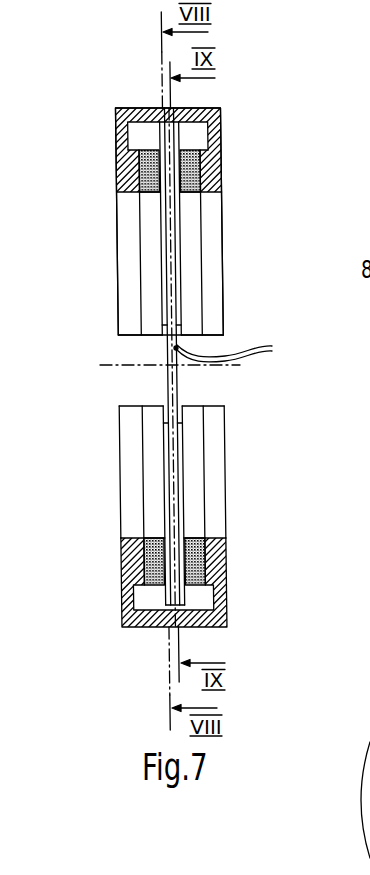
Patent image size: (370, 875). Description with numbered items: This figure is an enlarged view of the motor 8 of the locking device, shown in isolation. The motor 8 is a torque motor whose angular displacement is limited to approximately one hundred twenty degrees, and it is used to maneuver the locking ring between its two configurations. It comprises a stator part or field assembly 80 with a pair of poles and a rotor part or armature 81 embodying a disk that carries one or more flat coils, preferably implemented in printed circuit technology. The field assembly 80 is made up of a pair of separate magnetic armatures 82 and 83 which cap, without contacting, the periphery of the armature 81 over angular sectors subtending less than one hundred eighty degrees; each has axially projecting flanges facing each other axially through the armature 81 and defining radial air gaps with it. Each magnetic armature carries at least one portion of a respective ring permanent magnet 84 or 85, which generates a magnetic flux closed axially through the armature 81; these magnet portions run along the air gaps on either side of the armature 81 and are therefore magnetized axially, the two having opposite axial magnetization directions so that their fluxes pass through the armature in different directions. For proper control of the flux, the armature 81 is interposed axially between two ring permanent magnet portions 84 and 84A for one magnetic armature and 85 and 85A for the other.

The probe assembly 8 is at (216, 371).
The stator part or field assembly 80 is at (226, 104).
The rotor part or armature 81 is at (172, 249).
The magnetic armature 82 is at (117, 291).
The magnetic armature 83 is at (121, 466).
The ring permanent magnet 84 is at (145, 150).
The ring permanent magnet portion 84A is at (213, 152).
The ring permanent magnet 85 is at (152, 586).
The ring permanent magnet portion 85A is at (213, 547).